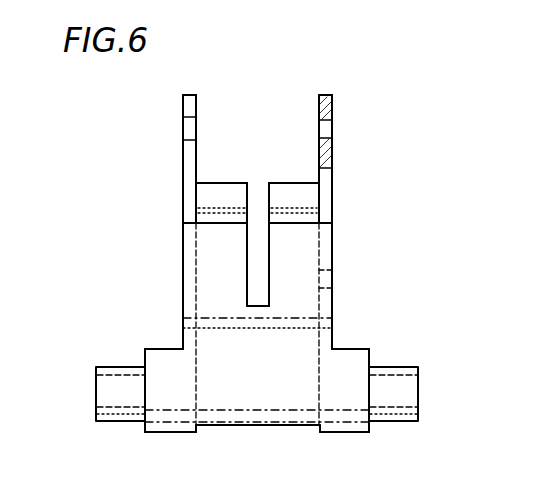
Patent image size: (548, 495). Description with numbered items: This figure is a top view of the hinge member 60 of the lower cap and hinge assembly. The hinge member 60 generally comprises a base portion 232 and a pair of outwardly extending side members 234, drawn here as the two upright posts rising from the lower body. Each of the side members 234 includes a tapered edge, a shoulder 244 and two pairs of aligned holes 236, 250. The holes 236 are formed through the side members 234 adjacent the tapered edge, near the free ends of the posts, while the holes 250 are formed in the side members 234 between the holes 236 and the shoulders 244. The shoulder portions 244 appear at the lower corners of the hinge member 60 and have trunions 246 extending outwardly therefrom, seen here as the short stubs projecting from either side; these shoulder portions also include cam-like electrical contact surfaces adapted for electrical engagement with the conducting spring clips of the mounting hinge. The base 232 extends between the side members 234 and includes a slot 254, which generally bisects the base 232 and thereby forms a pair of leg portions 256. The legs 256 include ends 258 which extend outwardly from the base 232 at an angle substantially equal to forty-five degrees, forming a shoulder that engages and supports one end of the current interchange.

The hinge member 60 is at (342, 202).
The base portion 232 is at (292, 372).
The side members 234 is at (182, 152).
The holes 236 is at (333, 123).
The shoulder 244 is at (172, 433).
The trunions 246 is at (105, 390).
The holes 250 is at (325, 278).
The slot 254 is at (258, 243).
The leg portions 256 is at (207, 242).
The ends 258 is at (290, 190).